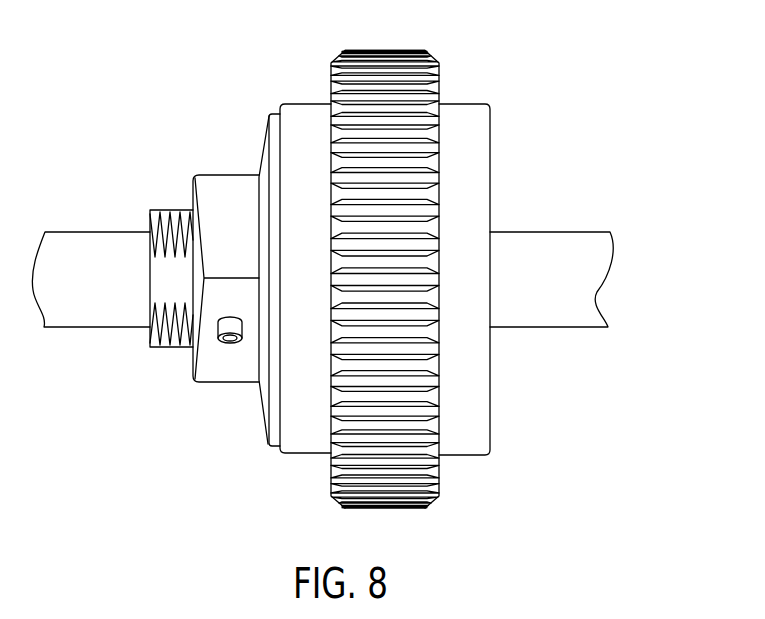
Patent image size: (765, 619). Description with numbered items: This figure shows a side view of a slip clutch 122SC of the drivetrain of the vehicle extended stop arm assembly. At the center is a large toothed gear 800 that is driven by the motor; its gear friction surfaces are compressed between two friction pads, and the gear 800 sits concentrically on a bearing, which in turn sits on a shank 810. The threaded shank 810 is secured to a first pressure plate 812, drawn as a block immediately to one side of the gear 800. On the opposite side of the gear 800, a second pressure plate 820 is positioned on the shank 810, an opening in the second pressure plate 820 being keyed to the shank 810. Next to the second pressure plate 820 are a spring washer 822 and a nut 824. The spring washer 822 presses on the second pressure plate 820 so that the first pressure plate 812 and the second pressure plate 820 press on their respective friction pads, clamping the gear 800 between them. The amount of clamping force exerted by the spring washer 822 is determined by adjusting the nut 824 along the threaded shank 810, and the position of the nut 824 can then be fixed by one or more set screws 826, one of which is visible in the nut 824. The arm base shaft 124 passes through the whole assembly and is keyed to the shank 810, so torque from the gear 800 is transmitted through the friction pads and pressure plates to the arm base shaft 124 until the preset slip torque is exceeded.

The slip clutch 122SC is at (630, 75).
The arm base shaft 124 is at (548, 232).
The gear 800 is at (384, 51).
The shank 810 is at (168, 210).
The first pressure plate 812 is at (463, 104).
The second pressure plate 820 is at (305, 104).
The spring washer 822 is at (262, 147).
The nut 824 is at (230, 383).
The set screw 826 is at (232, 337).